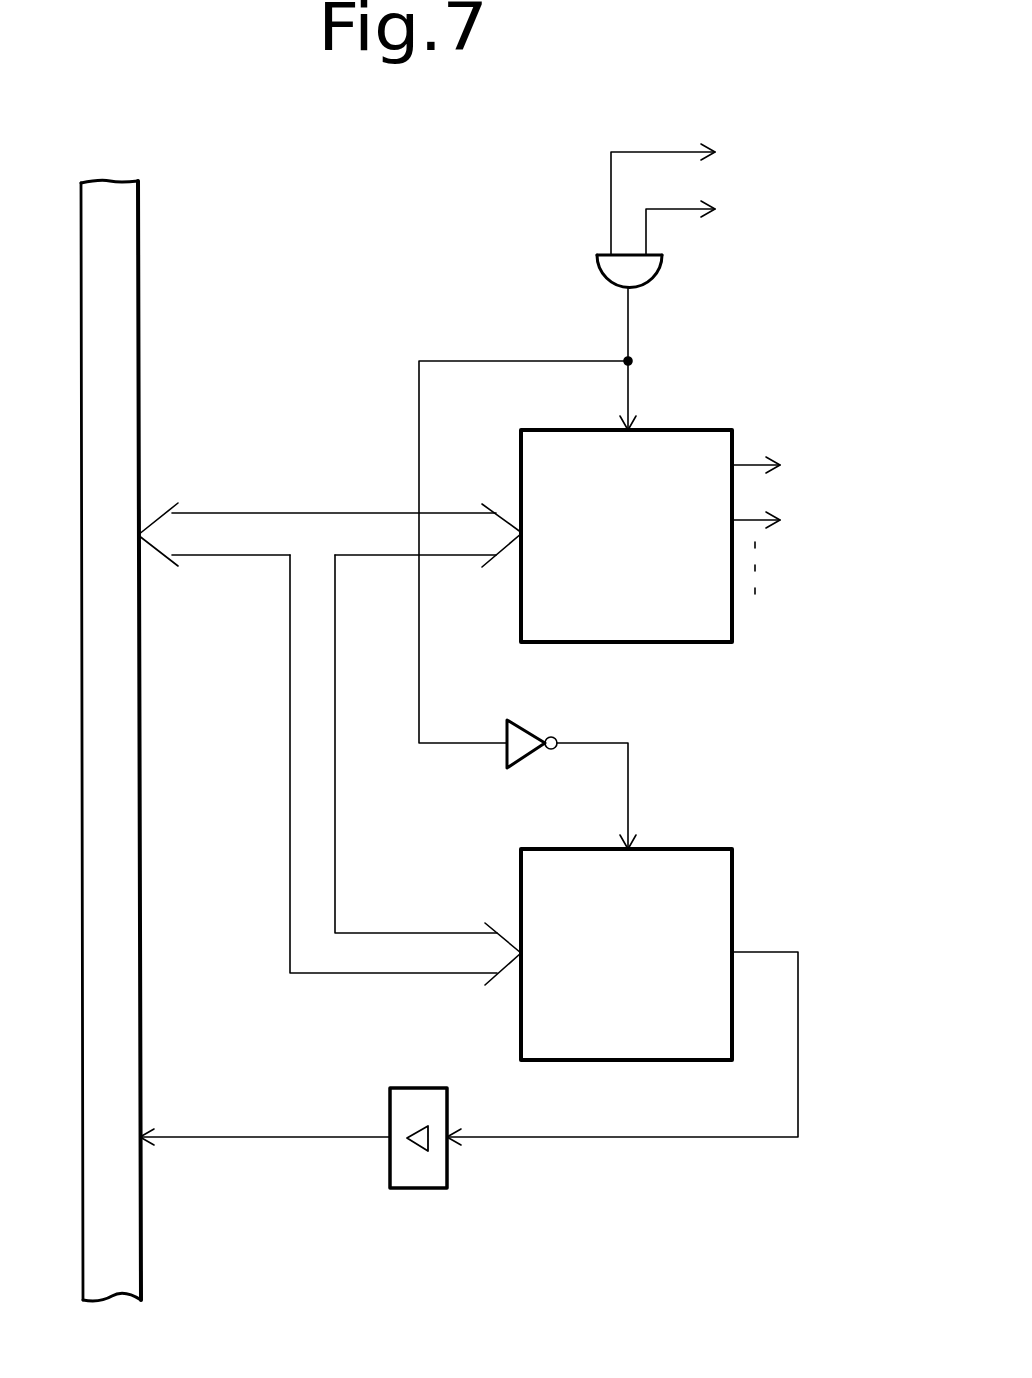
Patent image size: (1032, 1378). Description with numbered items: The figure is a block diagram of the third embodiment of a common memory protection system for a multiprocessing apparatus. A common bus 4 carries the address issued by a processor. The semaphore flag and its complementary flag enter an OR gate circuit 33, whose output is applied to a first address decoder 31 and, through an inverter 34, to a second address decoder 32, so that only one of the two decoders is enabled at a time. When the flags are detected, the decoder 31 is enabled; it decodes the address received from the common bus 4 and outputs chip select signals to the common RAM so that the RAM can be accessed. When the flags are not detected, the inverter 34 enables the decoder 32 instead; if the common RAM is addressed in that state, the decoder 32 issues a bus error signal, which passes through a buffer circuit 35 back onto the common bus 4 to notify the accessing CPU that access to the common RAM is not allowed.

The common bus 4 is at (140, 373).
The address decoder 31 is at (716, 430).
The address decoder 32 is at (694, 849).
The OR gate circuit 33 is at (662, 268).
The inverter 34 is at (528, 731).
The buffer circuit 35 is at (427, 1087).